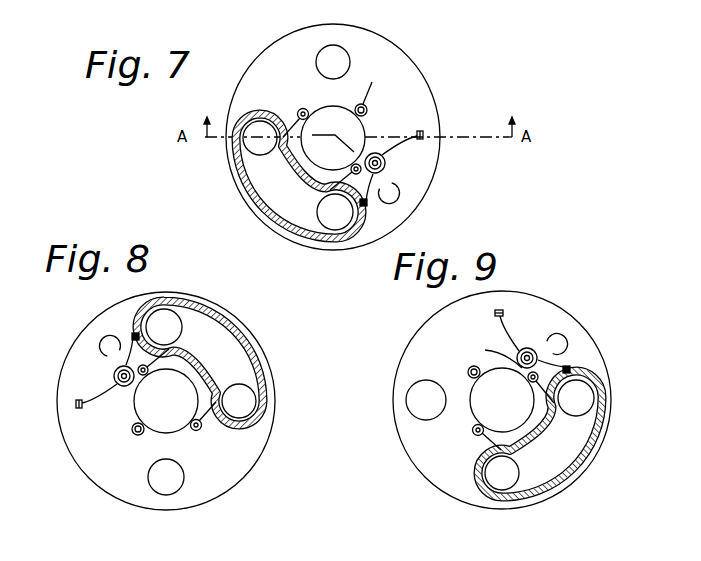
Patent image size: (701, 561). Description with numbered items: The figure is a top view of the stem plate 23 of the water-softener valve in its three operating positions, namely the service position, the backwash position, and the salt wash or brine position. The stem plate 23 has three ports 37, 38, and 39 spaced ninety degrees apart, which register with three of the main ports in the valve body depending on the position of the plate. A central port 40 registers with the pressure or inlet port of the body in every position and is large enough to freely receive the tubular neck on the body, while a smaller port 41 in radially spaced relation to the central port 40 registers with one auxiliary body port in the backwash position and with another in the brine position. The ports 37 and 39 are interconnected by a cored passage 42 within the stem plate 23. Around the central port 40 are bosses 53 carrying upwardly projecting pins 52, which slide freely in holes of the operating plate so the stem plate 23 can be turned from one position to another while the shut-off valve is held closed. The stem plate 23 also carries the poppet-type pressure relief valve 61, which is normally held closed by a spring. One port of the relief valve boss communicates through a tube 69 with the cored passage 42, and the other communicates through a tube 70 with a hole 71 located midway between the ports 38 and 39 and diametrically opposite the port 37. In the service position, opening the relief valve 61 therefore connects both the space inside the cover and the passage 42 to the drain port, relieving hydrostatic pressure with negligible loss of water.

In FIG. 7, the stem plate 23 is at (424, 84).
In FIG. 8, the stem plate 23 is at (265, 443).
In FIG. 9, the stem plate 23 is at (593, 342).
In FIG. 7, the port 37 is at (238, 140).
In FIG. 8, the port 37 is at (248, 395).
In FIG. 9, the port 37 is at (497, 482).
In FIG. 7, the port 38 is at (347, 55).
In FIG. 8, the port 38 is at (175, 487).
In FIG. 9, the port 38 is at (417, 412).
In FIG. 7, the port 39 is at (330, 228).
In FIG. 8, the port 39 is at (172, 317).
In FIG. 9, the port 39 is at (590, 393).
In FIG. 7, the central port 40 is at (357, 130).
In FIG. 8, the central port 40 is at (162, 427).
In FIG. 9, the central port 40 is at (470, 418).
In FIG. 7, the smaller port 41 is at (387, 172).
In FIG. 8, the smaller port 41 is at (100, 340).
In FIG. 9, the smaller port 41 is at (560, 336).
In FIG. 7, the cored passage 42 is at (257, 187).
In FIG. 8, the cored passage 42 is at (232, 340).
In FIG. 9, the cored passage 42 is at (583, 454).
In FIG. 7, the pins 52 is at (284, 137).
In FIG. 8, the pins 52 is at (132, 428).
In FIG. 9, the pins 52 is at (477, 364).
In FIG. 7, the bosses 53 is at (367, 107).
In FIG. 8, the bosses 53 is at (203, 427).
In FIG. 9, the bosses 53 is at (467, 373).
In FIG. 7, the pressure relief valve 61 is at (392, 163).
In FIG. 8, the pressure relief valve 61 is at (108, 372).
In FIG. 9, the pressure relief valve 61 is at (535, 343).
In FIG. 7, the tube 69 is at (370, 207).
In FIG. 8, the tube 69 is at (132, 330).
In FIG. 9, the tube 69 is at (577, 360).
In FIG. 7, the tube 70 is at (385, 163).
In FIG. 8, the tube 70 is at (110, 391).
In FIG. 9, the tube 70 is at (497, 330).
In FIG. 7, the hole 71 is at (427, 134).
In FIG. 8, the hole 71 is at (75, 400).
In FIG. 9, the hole 71 is at (505, 312).